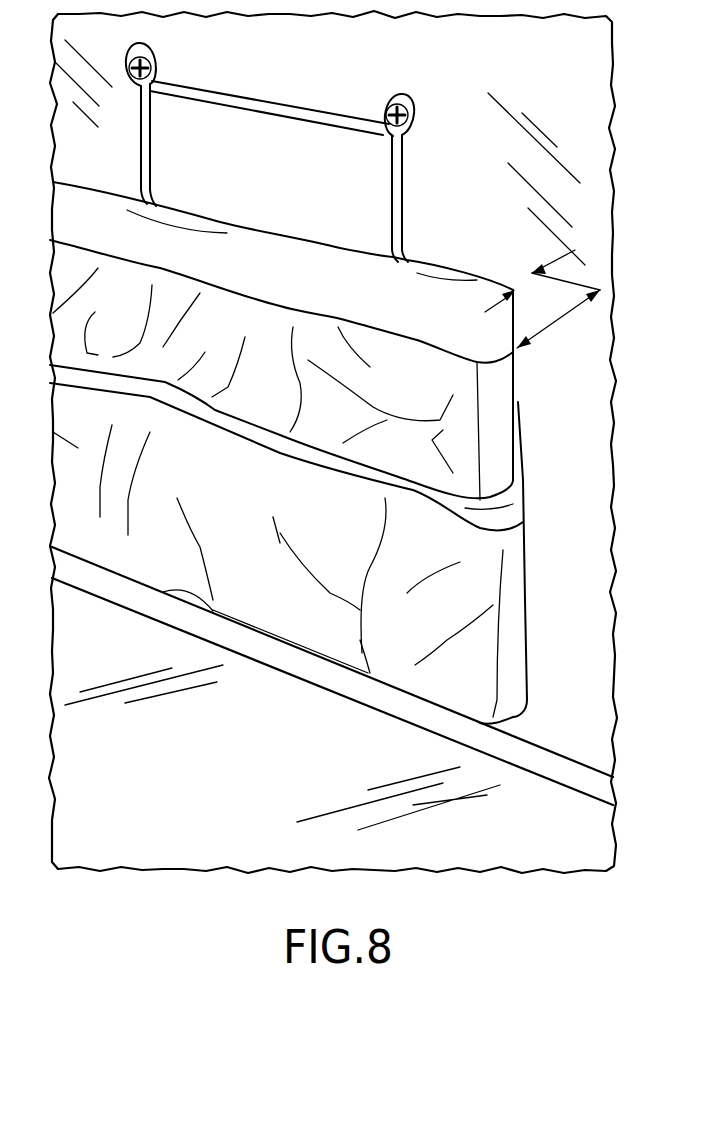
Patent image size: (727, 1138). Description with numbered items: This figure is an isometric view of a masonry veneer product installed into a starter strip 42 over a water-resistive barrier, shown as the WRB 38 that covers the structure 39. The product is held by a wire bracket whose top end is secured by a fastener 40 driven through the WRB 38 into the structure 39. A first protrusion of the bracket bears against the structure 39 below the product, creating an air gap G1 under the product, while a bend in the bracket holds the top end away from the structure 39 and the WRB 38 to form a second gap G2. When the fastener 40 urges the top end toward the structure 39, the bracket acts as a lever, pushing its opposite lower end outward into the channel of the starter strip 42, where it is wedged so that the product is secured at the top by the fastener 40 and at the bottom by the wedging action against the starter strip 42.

The WRB 38 is at (588, 77).
The structure 39 is at (445, 88).
The fastener 40 is at (405, 93).
The starter strip 42 is at (363, 697).
The air gap G1 is at (557, 322).
The second gap G2 is at (527, 282).